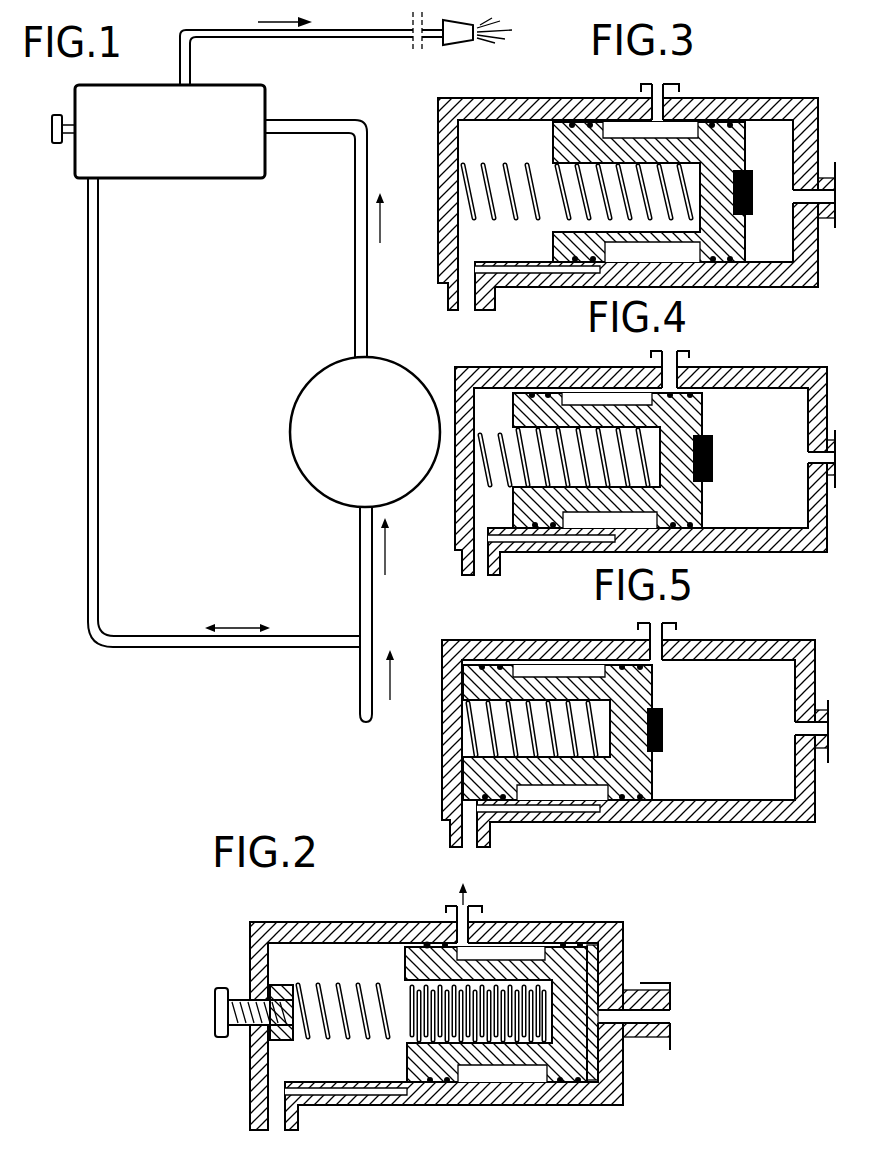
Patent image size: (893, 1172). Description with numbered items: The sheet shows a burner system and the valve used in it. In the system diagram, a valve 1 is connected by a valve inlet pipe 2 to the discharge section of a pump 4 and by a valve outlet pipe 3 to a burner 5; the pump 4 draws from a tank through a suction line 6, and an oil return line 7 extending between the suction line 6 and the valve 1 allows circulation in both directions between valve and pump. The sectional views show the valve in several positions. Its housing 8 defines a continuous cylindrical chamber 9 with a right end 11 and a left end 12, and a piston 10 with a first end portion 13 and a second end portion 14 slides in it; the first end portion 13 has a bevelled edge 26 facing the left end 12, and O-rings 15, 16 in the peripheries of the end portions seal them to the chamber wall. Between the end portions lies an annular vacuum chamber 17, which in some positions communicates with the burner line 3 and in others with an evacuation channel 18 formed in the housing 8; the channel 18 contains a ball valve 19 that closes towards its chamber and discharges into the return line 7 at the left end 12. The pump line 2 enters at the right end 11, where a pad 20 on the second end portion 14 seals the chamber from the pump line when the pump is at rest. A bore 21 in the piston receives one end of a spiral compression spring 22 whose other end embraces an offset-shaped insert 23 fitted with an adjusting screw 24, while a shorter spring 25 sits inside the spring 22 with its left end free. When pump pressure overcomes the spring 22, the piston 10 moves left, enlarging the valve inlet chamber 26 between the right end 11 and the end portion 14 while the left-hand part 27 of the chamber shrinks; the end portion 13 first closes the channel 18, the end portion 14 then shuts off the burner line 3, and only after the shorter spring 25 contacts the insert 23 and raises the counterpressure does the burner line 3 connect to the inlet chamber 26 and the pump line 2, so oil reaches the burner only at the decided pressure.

In FIG. 1, the valve 1 is at (175, 180).
In FIG. 1, the valve inlet pipe 2 is at (367, 165).
In FIG. 3, the valve inlet pipe 2 is at (828, 195).
In FIG. 4, the valve inlet pipe 2 is at (830, 455).
In FIG. 5, the valve inlet pipe 2 is at (824, 728).
In FIG. 2, the valve inlet pipe 2 is at (641, 1018).
In FIG. 1, the valve outlet pipe 3 is at (353, 38).
In FIG. 3, the valve outlet pipe 3 is at (660, 85).
In FIG. 4, the valve outlet pipe 3 is at (672, 352).
In FIG. 5, the valve outlet pipe 3 is at (665, 626).
In FIG. 2, the valve outlet pipe 3 is at (475, 905).
In FIG. 1, the pump 4 is at (305, 383).
In FIG. 1, the burner 5 is at (455, 36).
In FIG. 1, the suction line 6 is at (360, 680).
In FIG. 1, the oil return line 7 is at (98, 355).
In FIG. 3, the oil return line 7 is at (462, 312).
In FIG. 4, the oil return line 7 is at (483, 574).
In FIG. 5, the oil return line 7 is at (465, 846).
In FIG. 2, the oil return line 7 is at (268, 1110).
In FIG. 2, the housing 8 is at (615, 1103).
In FIG. 2, the cylindrical chamber 9 is at (325, 940).
In FIG. 3, the piston 10 is at (565, 240).
In FIG. 4, the piston 10 is at (690, 502).
In FIG. 5, the piston 10 is at (650, 778).
In FIG. 2, the piston 10 is at (512, 1058).
In FIG. 2, the right end of chamber 11 is at (602, 962).
In FIG. 2, the left end of chamber 12 is at (252, 1090).
In FIG. 2, the first end portion 13 is at (438, 1057).
In FIG. 2, the second end portion 14 is at (573, 1050).
In FIG. 2, the O-ring 15 is at (423, 945).
In FIG. 2, the O-ring 16 is at (573, 942).
In FIG. 3, the annular vacuum chamber 17 is at (690, 252).
In FIG. 4, the annular vacuum chamber 17 is at (645, 520).
In FIG. 5, the annular vacuum chamber 17 is at (565, 792).
In FIG. 2, the annular vacuum chamber 17 is at (505, 950).
In FIG. 3, the evacuation channel 18 is at (562, 276).
In FIG. 4, the evacuation channel 18 is at (585, 542).
In FIG. 5, the evacuation channel 18 is at (600, 816).
In FIG. 2, the evacuation channel 18 is at (382, 1096).
In FIG. 2, the ball valve 19 is at (343, 1087).
In FIG. 2, the pad 20 is at (625, 1000).
In FIG. 2, the bore 21 is at (477, 1047).
In FIG. 3, the spiral compression spring 22 is at (488, 166).
In FIG. 4, the spiral compression spring 22 is at (490, 487).
In FIG. 5, the spiral compression spring 22 is at (467, 712).
In FIG. 2, the spiral compression spring 22 is at (588, 990).
In FIG. 2, the insert 23 is at (262, 1027).
In FIG. 2, the adjusting screw 24 is at (220, 988).
In FIG. 2, the shorter spring 25 is at (400, 983).
In FIG. 3, the valve inlet chamber 26 is at (770, 170).
In FIG. 4, the valve inlet chamber 26 is at (775, 400).
In FIG. 5, the valve inlet chamber 26 is at (757, 680).
In FIG. 2, the valve inlet chamber 26 is at (403, 1078).
In FIG. 3, the left-hand part of valve chamber 27 is at (520, 185).
In FIG. 4, the left-hand part of valve chamber 27 is at (493, 410).
In FIG. 2, the left-hand part of valve chamber 27 is at (284, 957).